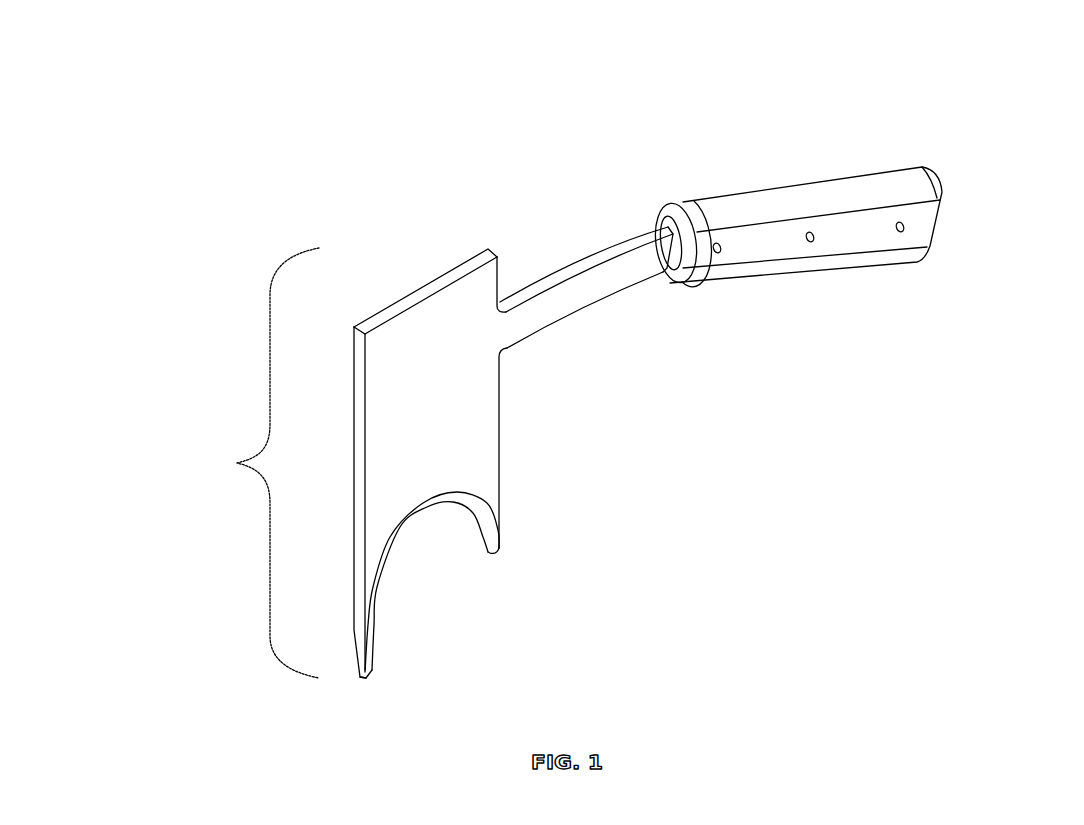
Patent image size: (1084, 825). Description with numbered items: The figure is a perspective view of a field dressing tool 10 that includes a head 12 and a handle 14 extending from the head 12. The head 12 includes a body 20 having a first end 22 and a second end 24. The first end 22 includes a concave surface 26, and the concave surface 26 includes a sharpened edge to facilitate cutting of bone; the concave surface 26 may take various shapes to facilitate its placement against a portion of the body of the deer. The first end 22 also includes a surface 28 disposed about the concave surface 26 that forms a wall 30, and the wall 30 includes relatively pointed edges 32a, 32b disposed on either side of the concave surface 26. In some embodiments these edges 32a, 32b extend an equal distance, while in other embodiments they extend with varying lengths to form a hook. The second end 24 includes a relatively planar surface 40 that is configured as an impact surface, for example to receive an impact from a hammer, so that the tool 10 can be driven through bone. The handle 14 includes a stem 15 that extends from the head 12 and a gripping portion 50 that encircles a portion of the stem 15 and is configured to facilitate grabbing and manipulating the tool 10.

The tool 10 is at (118, 155).
The head 12 is at (227, 448).
The handle 14 is at (862, 279).
The stem 15 is at (552, 282).
The body 20 is at (536, 367).
The first end 22 is at (592, 520).
The second end 24 is at (503, 97).
The concave surface 26 is at (425, 512).
The surface 28 is at (499, 438).
The wall 30 is at (360, 502).
The pointed edge 32a is at (492, 552).
The pointed edge 32b is at (366, 680).
The planar surface 40 is at (423, 292).
The gripping portion 50 is at (830, 190).